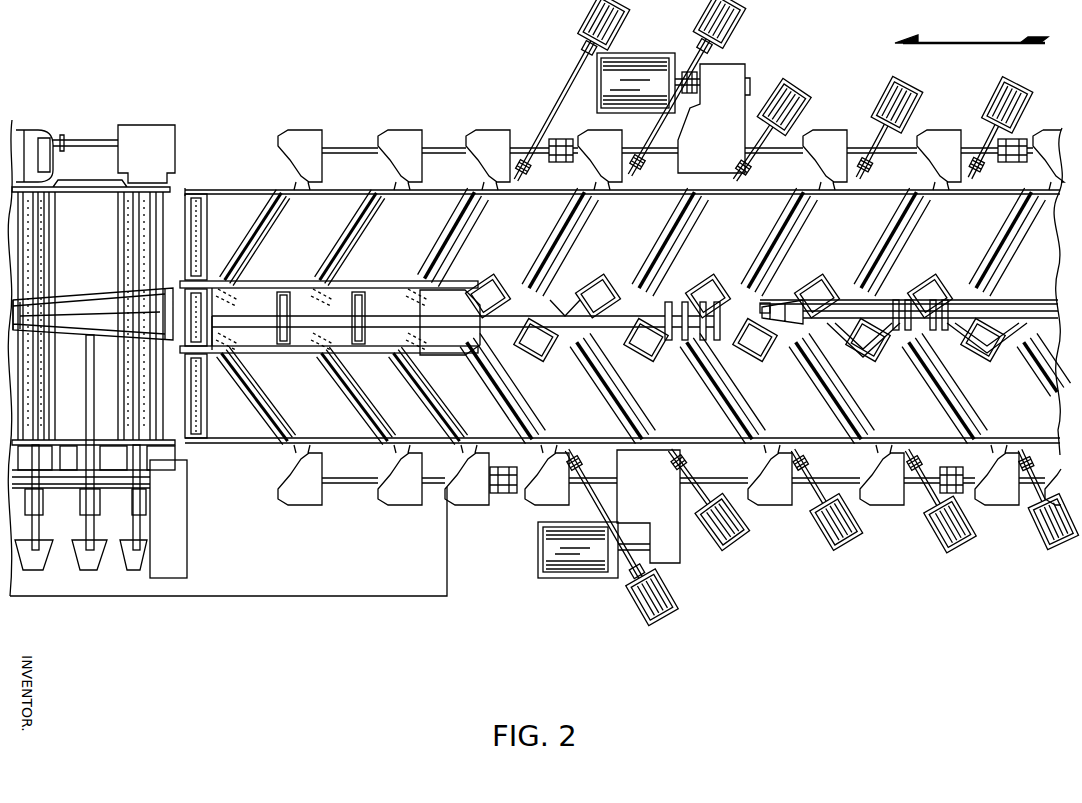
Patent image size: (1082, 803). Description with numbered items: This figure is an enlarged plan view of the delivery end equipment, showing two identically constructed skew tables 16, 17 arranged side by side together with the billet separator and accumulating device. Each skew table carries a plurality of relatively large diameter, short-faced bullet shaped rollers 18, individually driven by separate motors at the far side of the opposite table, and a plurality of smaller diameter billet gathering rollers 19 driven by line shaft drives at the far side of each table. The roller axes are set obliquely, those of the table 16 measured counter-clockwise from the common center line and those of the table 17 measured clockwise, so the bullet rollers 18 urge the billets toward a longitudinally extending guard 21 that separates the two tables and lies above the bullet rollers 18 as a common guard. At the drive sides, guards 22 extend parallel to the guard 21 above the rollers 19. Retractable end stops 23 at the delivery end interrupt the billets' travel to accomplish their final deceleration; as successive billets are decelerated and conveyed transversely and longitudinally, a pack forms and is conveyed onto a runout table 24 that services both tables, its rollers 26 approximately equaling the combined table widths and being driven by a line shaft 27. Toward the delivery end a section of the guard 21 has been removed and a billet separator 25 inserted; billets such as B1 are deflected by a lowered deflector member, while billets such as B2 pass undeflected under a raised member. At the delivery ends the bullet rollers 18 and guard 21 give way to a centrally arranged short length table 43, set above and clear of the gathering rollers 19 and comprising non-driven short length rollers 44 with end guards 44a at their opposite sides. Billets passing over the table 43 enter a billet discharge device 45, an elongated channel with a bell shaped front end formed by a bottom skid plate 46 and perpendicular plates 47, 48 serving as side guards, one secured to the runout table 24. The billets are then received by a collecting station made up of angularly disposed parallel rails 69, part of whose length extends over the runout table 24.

The skew table 16 is at (909, 133).
The skew table 17 is at (887, 512).
The bullet shaped rollers 18 is at (633, 283).
The billet gathering rollers 19 is at (378, 219).
The guard 21 is at (561, 314).
The guards 22 is at (335, 197).
The retractable end stops 23 is at (199, 235).
The runout table 24 is at (185, 191).
The billet separator 25 is at (793, 322).
The rollers 26 is at (43, 252).
The line shaft 27 is at (77, 143).
The short length table 43 is at (379, 278).
The short length rollers 44 is at (362, 306).
The end guards 44a is at (300, 352).
The billet discharge device 45 is at (93, 298).
The bottom skid plate 46 is at (136, 331).
The plate 47 is at (164, 296).
The plate 48 is at (86, 338).
The rails 69 is at (130, 536).
The billet B1 is at (849, 295).
The billet B2 is at (460, 333).